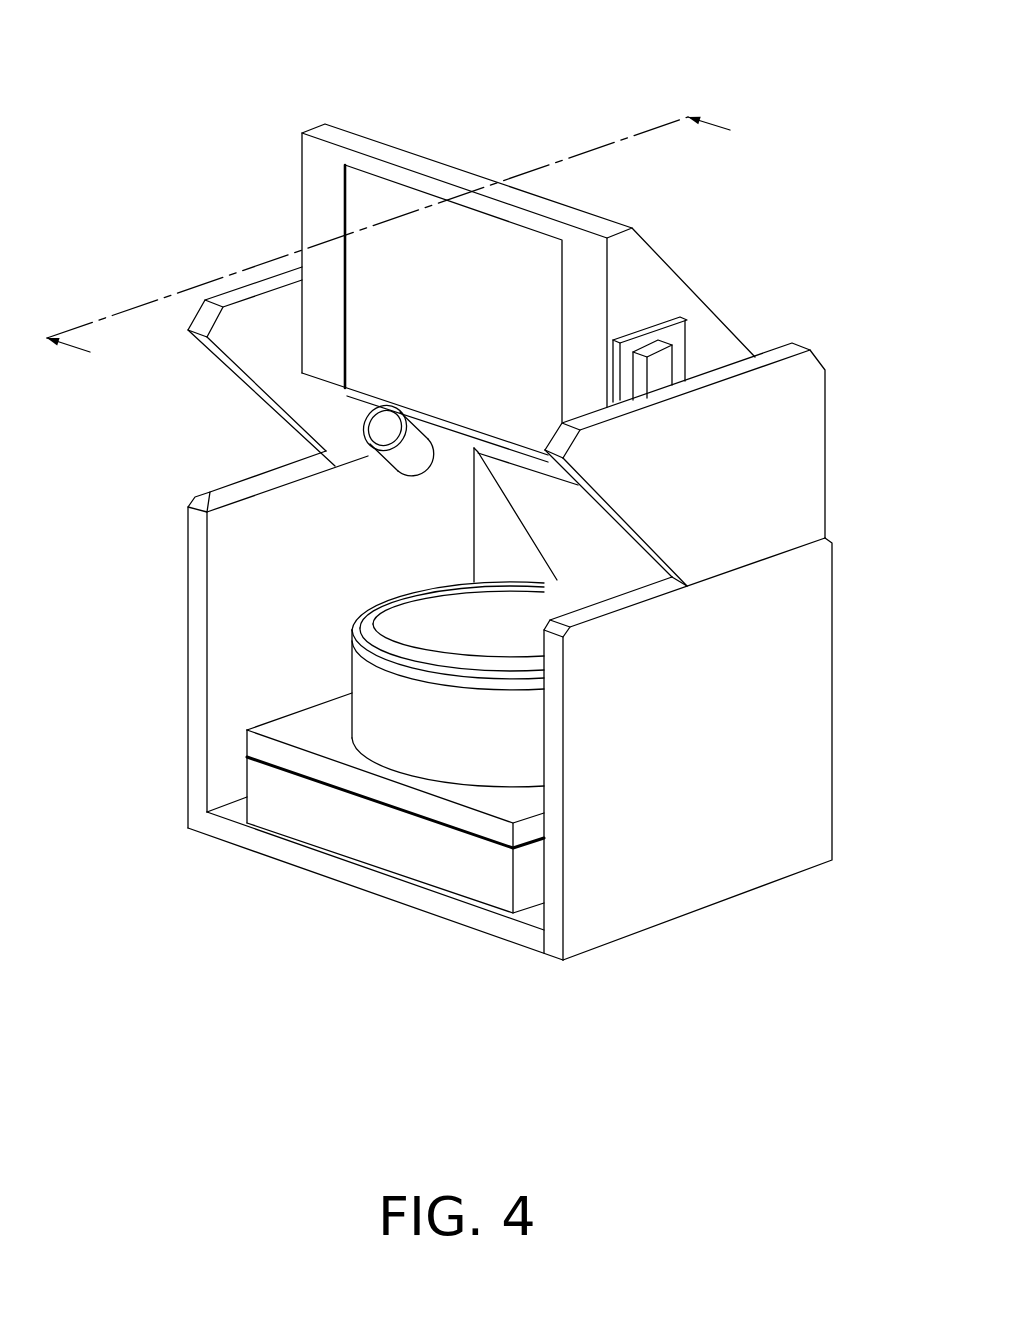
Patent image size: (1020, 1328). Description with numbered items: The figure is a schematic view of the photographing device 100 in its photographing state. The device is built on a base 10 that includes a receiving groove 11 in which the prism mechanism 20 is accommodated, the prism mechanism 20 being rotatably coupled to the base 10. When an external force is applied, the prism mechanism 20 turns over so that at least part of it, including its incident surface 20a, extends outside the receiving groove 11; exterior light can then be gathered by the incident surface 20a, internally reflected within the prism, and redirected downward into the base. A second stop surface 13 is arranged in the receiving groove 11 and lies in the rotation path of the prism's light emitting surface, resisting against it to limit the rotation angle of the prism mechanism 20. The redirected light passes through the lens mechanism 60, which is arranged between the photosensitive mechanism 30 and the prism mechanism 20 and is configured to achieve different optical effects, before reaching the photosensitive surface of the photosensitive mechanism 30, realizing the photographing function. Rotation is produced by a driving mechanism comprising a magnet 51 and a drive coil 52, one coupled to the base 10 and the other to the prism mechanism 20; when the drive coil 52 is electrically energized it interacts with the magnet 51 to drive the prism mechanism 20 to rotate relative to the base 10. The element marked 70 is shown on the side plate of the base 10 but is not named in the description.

The photographing device 100 is at (520, 49).
The base 10 is at (807, 443).
The receiving groove 11 is at (272, 336).
The second stop surface 13 is at (480, 444).
The prism mechanism 20 is at (645, 265).
The incident surface 20a is at (363, 202).
The photosensitive mechanism 30 is at (322, 800).
The magnet 51 is at (658, 368).
The drive coil 52 is at (380, 427).
The lens mechanism 60 is at (383, 702).
The side plate 70 is at (585, 565).